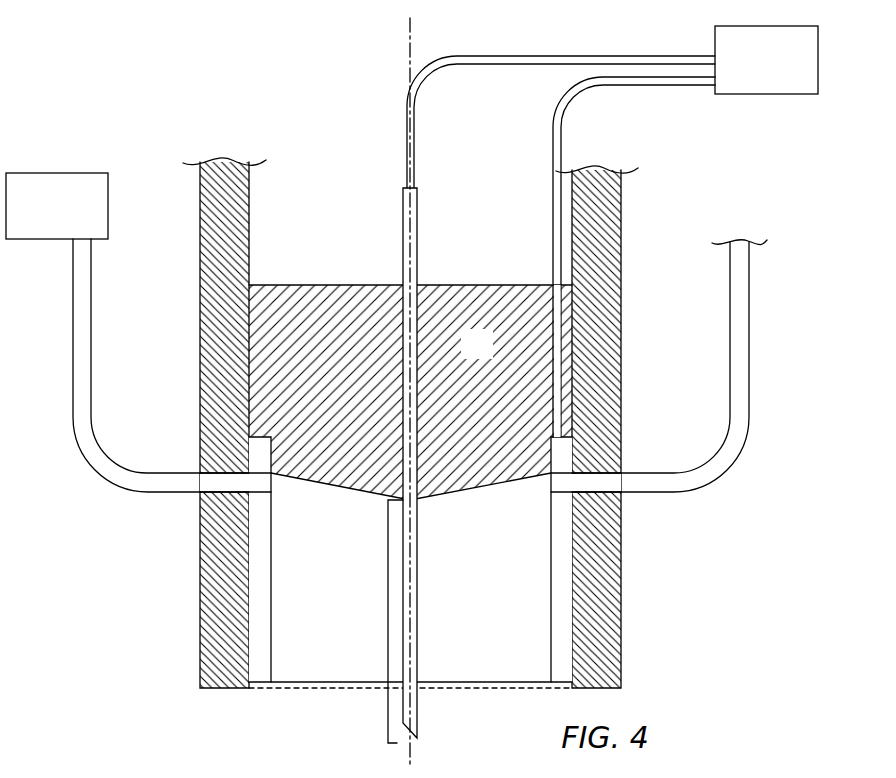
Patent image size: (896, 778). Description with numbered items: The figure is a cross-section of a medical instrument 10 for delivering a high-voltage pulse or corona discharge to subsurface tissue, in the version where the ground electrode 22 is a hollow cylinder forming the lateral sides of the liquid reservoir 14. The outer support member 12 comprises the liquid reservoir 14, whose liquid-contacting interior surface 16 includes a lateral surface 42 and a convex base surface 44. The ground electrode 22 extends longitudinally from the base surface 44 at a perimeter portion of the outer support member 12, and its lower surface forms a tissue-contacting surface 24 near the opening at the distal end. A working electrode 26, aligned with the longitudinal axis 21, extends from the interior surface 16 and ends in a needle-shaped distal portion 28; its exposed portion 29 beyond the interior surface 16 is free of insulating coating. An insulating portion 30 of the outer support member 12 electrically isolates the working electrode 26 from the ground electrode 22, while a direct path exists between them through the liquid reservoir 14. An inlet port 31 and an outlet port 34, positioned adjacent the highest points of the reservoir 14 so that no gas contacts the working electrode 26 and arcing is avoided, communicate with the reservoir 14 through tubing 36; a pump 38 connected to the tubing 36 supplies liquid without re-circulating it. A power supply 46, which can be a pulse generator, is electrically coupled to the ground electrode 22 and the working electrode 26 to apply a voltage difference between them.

The medical instrument 10 is at (412, 391).
The outer support member 12 is at (622, 573).
The liquid reservoir 14 is at (300, 616).
The liquid-contacting interior surface 16 is at (274, 510).
The longitudinal axis 21 is at (411, 750).
The ground electrode 22 is at (245, 553).
The tissue-contacting surface 24 is at (258, 683).
The working electrode 26 is at (418, 570).
The needle-shaped distal portion 28 is at (413, 718).
The exposed portion 29 is at (388, 592).
The insulating portion 30 is at (466, 356).
The inlet port 31 is at (222, 493).
The outlet port 34 is at (598, 483).
The tubing 36 is at (73, 362).
The pump 38 is at (44, 216).
The lateral surface 42 is at (268, 590).
The base surface 44 is at (303, 474).
The power supply 46 is at (756, 73).